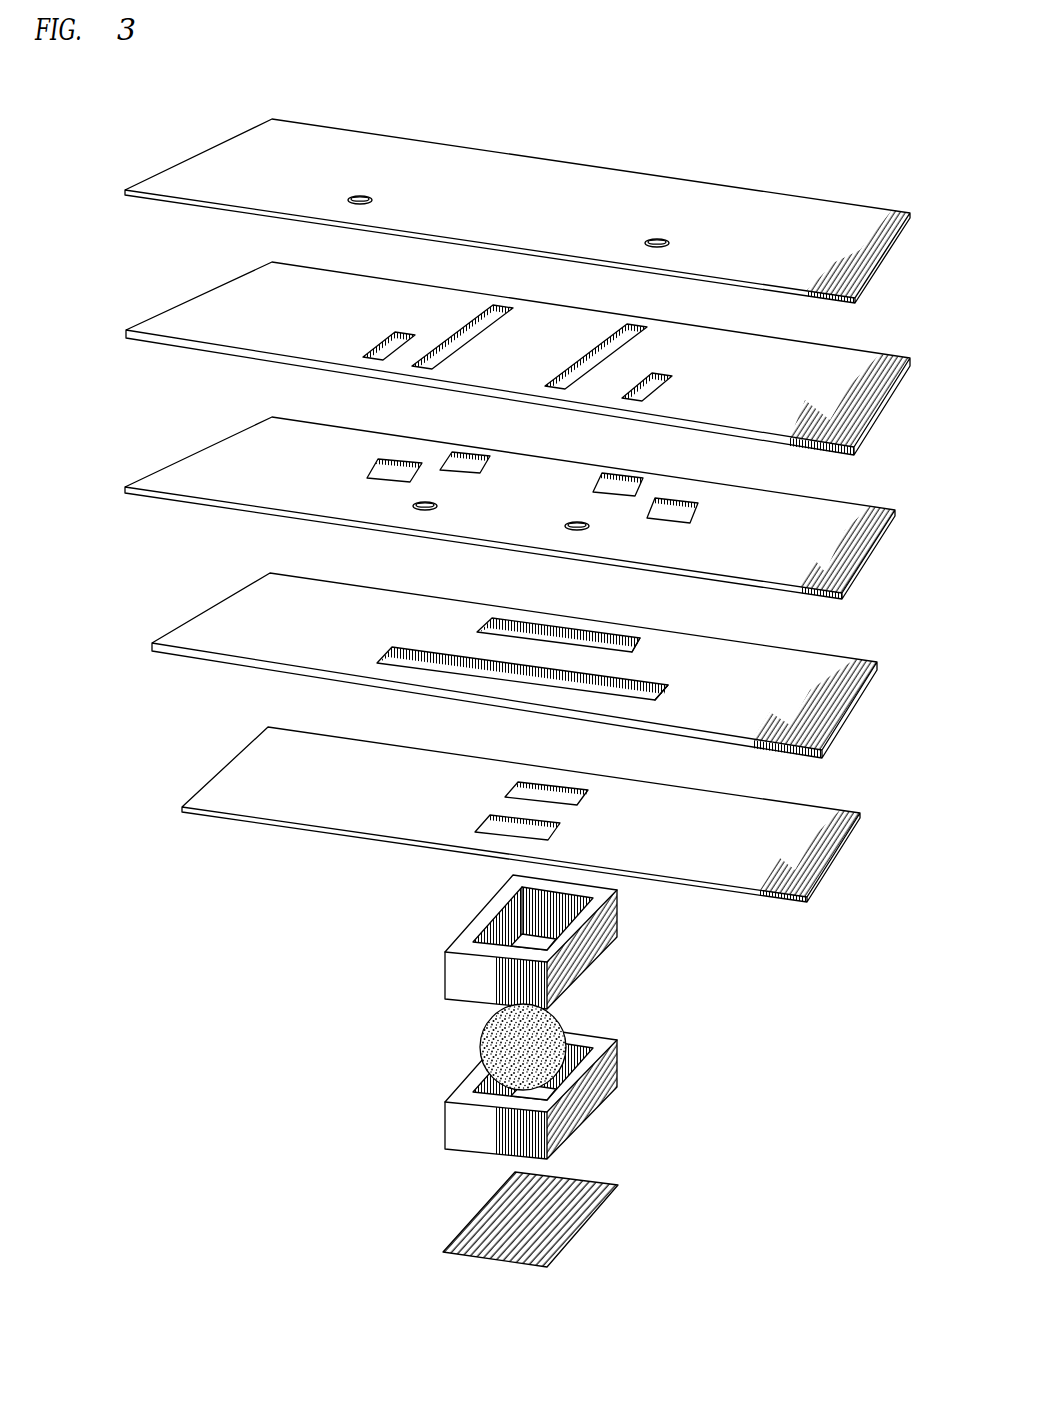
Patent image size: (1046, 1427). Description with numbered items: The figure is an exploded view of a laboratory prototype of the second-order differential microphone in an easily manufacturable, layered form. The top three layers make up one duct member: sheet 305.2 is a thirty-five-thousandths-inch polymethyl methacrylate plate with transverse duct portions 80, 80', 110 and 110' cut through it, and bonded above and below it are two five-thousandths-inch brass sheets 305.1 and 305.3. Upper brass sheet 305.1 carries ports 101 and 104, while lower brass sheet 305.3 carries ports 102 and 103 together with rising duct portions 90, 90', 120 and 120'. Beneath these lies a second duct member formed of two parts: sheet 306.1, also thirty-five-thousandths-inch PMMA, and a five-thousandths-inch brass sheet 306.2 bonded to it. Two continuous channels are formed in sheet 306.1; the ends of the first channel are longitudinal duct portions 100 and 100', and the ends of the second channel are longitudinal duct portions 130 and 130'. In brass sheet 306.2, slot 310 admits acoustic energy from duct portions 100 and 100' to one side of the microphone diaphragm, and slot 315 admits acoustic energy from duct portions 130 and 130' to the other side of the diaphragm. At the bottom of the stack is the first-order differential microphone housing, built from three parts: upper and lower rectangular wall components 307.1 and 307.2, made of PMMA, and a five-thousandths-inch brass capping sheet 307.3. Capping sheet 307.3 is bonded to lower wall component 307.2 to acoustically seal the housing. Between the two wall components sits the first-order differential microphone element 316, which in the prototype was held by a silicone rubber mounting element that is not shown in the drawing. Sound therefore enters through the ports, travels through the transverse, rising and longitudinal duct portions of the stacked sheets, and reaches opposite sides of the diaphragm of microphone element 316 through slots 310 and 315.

The sheet 305.1 is at (125, 190).
The sheet 305.2 is at (126, 330).
The sheet 305.3 is at (125, 487).
The sheet 306.1 is at (152, 643).
The sheet 306.2 is at (182, 807).
The port 101 is at (371, 199).
The port 104 is at (668, 243).
The transverse duct portion 80 is at (400, 332).
The transverse duct portion 80' is at (662, 374).
The transverse duct portion 110 is at (480, 321).
The transverse duct portion 110' is at (616, 341).
The rising duct portion 90 is at (384, 484).
The rising duct portion 90' is at (657, 525).
The rising duct portion 120 is at (485, 447).
The rising duct portion 120' is at (637, 472).
The port 102 is at (438, 506).
The port 103 is at (565, 526).
The longitudinal duct portion 100 is at (522, 658).
The longitudinal duct portion 100' is at (672, 677).
The longitudinal duct portion 130 is at (558, 617).
The longitudinal duct portion 130' is at (652, 628).
The slot 315 is at (585, 803).
The slot 310 is at (555, 840).
The upper rectangular wall component 307.1 is at (617, 891).
The lower rectangular wall component 307.2 is at (615, 1041).
The FOD microphone element 316 is at (480, 1042).
The capping sheet 307.3 is at (617, 1186).